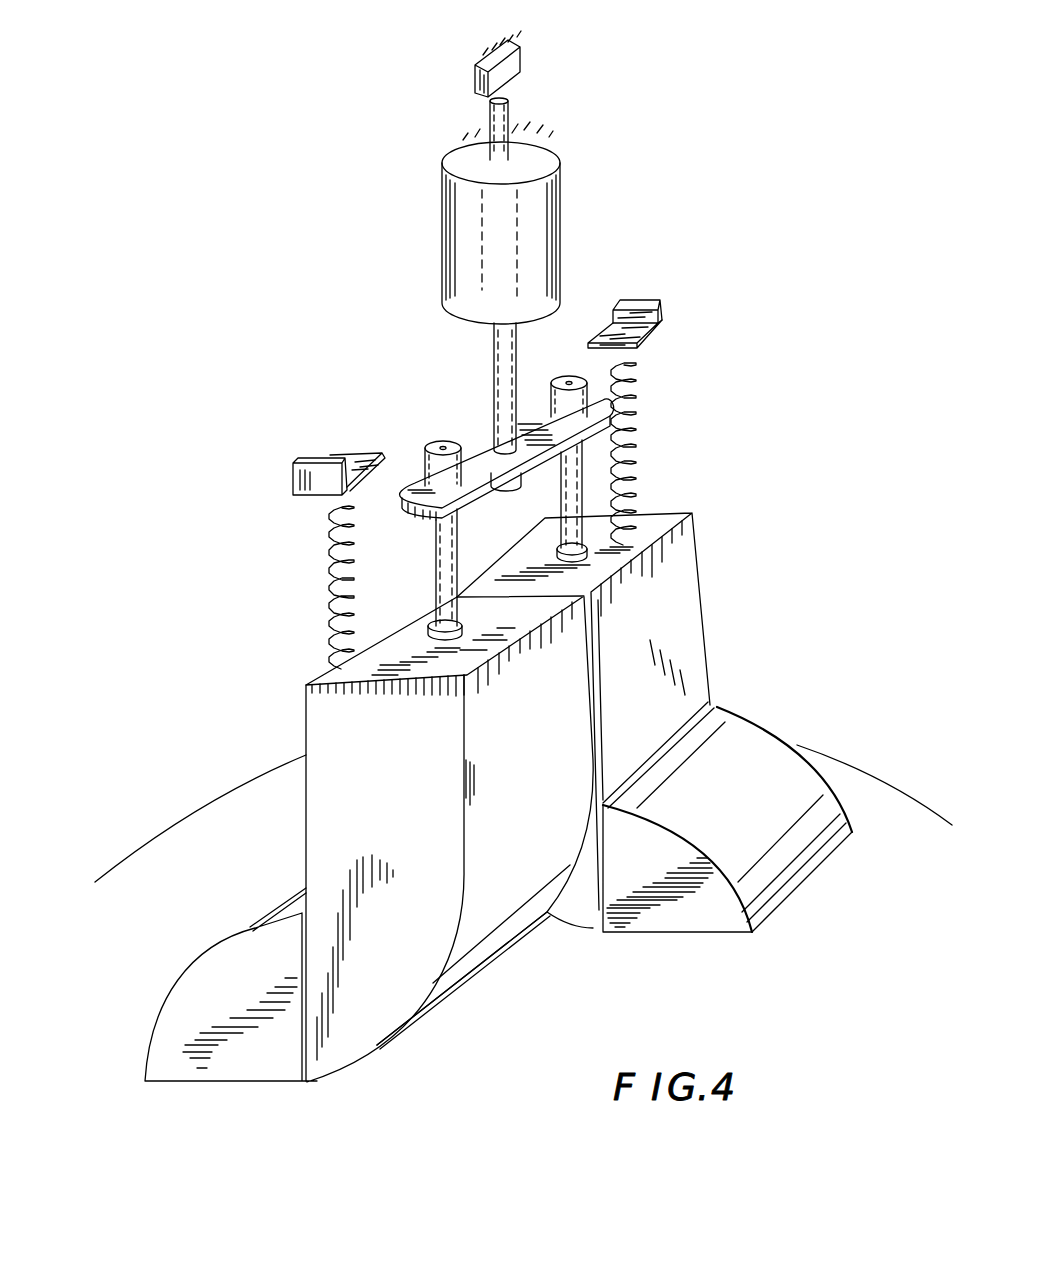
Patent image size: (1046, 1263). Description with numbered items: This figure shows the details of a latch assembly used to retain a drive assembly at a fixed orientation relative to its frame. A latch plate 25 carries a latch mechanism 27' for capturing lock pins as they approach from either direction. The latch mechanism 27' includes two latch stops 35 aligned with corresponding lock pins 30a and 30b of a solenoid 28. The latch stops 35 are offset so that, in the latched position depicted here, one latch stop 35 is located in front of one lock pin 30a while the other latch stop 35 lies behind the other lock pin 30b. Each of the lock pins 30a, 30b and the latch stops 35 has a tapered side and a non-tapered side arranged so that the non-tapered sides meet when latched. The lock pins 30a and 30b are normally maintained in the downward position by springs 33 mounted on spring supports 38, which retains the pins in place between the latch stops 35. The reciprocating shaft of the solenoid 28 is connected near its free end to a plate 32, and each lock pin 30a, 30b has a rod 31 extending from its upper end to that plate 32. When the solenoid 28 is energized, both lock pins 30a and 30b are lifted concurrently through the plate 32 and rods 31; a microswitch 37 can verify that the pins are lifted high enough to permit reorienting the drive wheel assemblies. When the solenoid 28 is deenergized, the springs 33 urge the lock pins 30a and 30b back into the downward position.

The latch plate 25 is at (880, 790).
The latch mechanism 27' is at (462, 987).
The solenoid 28 is at (527, 233).
The lock pin 30a is at (337, 747).
The lock pin 30b is at (684, 608).
The rod 31 is at (573, 527).
The plate 32 is at (487, 453).
The spring 33 is at (637, 450).
The latch stop 35 is at (763, 770).
The microswitch 37 is at (516, 62).
The spring support 38 is at (663, 310).